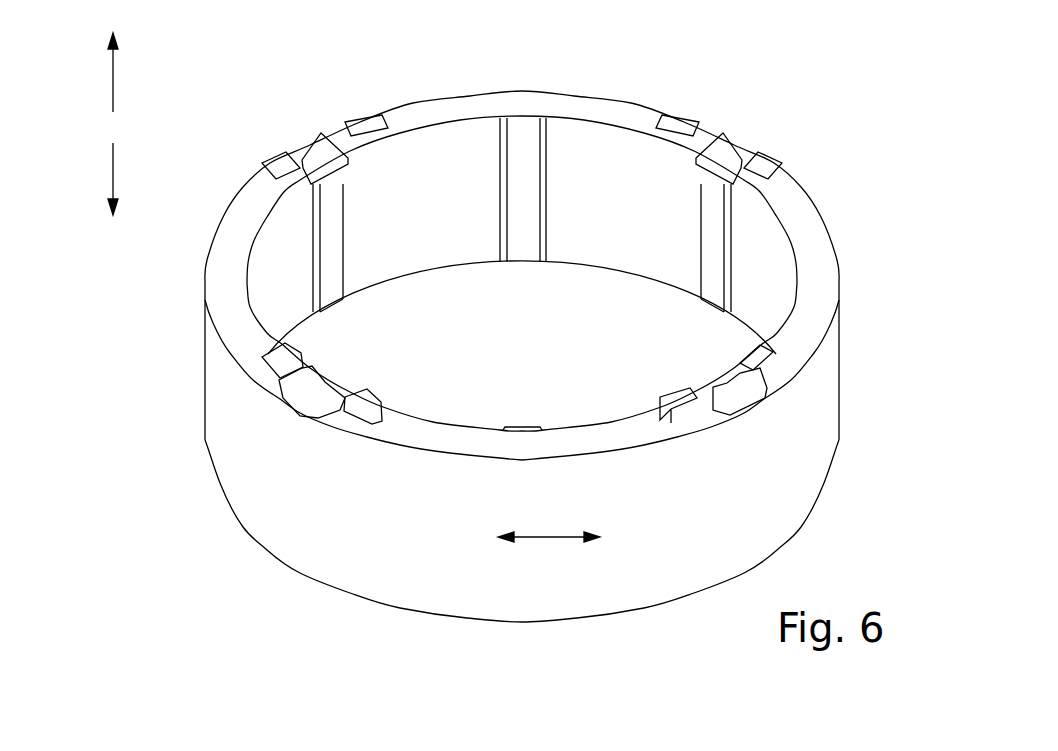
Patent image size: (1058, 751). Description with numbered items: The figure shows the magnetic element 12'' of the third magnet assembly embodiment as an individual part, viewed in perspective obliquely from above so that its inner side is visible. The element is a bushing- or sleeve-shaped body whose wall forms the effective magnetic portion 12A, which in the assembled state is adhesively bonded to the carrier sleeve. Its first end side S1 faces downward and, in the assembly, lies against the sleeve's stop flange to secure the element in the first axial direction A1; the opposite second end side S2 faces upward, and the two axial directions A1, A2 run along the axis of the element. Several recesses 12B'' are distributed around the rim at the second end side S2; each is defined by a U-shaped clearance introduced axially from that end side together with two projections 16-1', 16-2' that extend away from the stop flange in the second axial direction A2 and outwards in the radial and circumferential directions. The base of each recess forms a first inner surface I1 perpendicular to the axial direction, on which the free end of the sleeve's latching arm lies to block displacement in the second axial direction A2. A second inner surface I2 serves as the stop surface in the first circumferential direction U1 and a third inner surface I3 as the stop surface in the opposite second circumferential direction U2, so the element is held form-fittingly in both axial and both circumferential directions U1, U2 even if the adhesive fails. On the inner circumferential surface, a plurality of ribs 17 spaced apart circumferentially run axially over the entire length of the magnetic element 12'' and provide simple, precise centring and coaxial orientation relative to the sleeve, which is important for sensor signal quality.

The magnetic element 12'' is at (499, 333).
The effective magnetic portion 12A is at (174, 370).
The recess 12B'' is at (584, 301).
The first projection 16-1' is at (550, 232).
The second projection 16-2' is at (585, 228).
The rib 17 is at (522, 140).
The first inner surface I1 is at (735, 158).
The second inner surface I2 is at (723, 133).
The third inner surface I3 is at (713, 410).
The first end side S1 is at (257, 564).
The second end side S2 is at (431, 88).
The first axial direction A1 is at (98, 179).
The second axial direction A2 is at (98, 72).
The first circumferential direction U1 is at (593, 539).
The second circumferential direction U2 is at (503, 539).